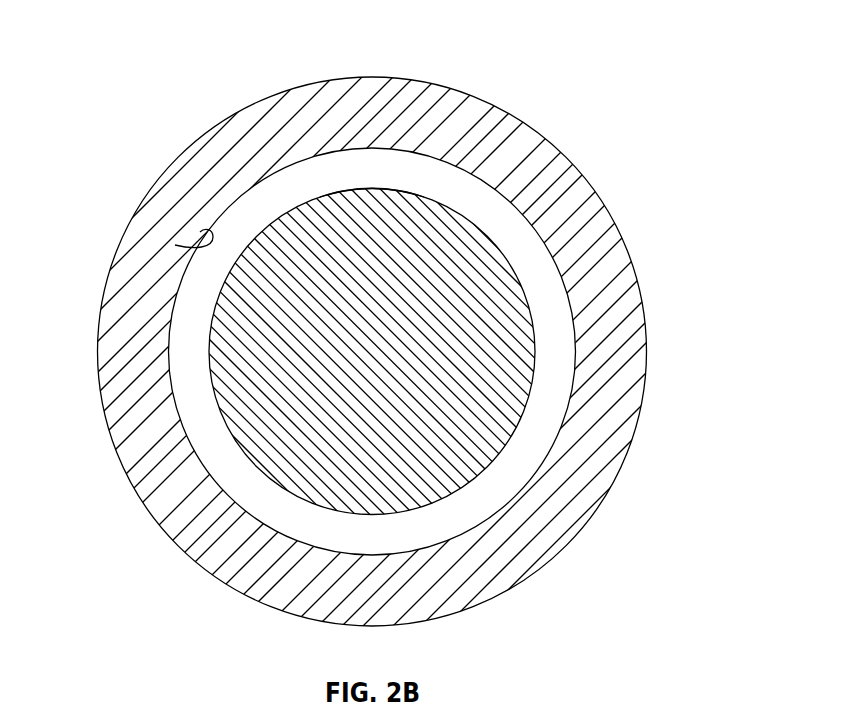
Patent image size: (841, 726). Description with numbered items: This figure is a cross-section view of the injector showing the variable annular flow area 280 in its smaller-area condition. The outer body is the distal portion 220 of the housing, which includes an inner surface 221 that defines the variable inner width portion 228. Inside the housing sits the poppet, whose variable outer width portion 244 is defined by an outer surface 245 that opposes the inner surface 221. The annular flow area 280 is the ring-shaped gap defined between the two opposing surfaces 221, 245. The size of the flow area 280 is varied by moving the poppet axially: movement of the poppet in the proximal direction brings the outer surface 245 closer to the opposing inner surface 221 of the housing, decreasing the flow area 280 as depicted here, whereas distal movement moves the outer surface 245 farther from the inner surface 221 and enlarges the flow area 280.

The distal portion 220 is at (187, 153).
The inner surface 221 is at (175, 245).
The variable inner width portion 228 is at (163, 352).
The variable outer width portion 244 is at (525, 343).
The outer surface 245 is at (340, 189).
The variable annular flow area 280 is at (440, 183).